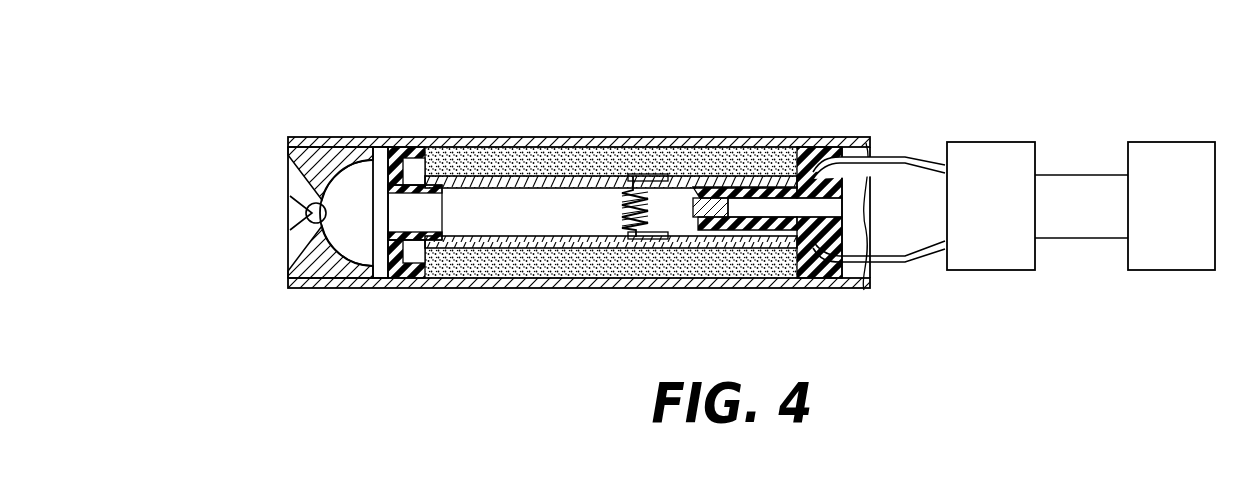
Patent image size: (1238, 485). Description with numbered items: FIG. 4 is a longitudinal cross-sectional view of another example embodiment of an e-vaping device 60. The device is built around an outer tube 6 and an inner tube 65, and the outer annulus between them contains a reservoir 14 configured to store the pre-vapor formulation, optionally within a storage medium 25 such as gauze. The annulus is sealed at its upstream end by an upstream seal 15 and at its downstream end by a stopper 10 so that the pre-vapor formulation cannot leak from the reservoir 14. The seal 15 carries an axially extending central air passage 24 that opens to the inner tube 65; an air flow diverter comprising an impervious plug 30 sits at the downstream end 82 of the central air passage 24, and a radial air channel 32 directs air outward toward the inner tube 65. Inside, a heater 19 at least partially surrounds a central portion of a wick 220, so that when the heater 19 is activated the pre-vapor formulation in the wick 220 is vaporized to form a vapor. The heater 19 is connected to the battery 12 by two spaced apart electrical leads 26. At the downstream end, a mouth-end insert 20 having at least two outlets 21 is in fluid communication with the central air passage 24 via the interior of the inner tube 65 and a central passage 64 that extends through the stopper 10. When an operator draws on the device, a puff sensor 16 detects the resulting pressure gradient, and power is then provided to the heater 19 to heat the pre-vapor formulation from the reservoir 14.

The outer tube 6 is at (550, 140).
The stopper 10 is at (405, 285).
The battery 12 is at (1010, 142).
The reservoir 14 is at (435, 160).
The upstream seal 15 is at (826, 288).
The puff sensor 16 is at (1195, 142).
The heater 19 is at (614, 228).
The mouth-end insert 20 is at (315, 150).
The outlets 21 is at (295, 248).
The central air passage 24 is at (828, 150).
The storage medium 25 is at (480, 162).
The electrical leads 26 is at (770, 160).
The impervious plug 30 is at (672, 175).
The radial air channel 32 is at (752, 230).
The e-vaping device 60 is at (770, 78).
The central passage 64 is at (395, 162).
The inner tube 65 is at (480, 262).
The downstream end 82 is at (692, 217).
The wick 220 is at (610, 180).